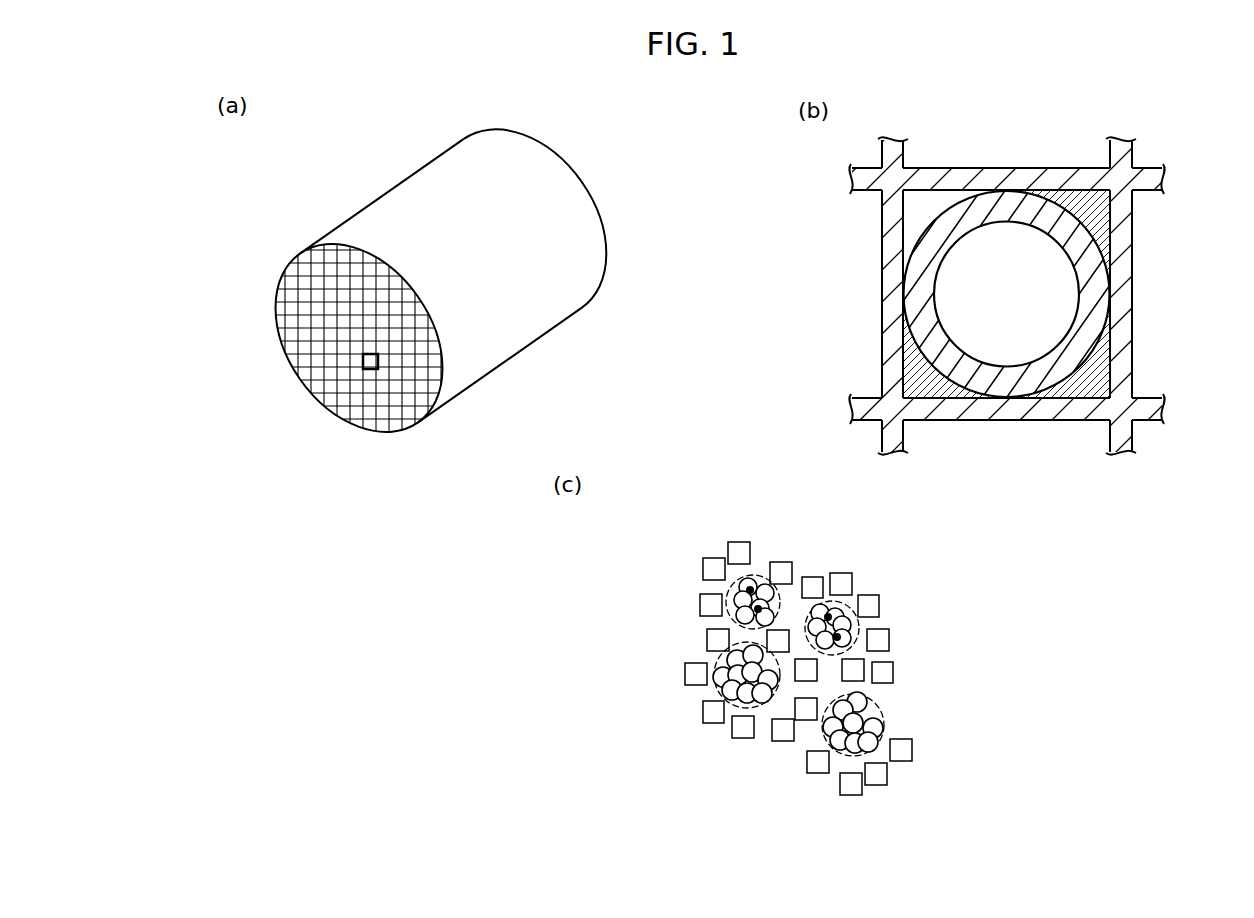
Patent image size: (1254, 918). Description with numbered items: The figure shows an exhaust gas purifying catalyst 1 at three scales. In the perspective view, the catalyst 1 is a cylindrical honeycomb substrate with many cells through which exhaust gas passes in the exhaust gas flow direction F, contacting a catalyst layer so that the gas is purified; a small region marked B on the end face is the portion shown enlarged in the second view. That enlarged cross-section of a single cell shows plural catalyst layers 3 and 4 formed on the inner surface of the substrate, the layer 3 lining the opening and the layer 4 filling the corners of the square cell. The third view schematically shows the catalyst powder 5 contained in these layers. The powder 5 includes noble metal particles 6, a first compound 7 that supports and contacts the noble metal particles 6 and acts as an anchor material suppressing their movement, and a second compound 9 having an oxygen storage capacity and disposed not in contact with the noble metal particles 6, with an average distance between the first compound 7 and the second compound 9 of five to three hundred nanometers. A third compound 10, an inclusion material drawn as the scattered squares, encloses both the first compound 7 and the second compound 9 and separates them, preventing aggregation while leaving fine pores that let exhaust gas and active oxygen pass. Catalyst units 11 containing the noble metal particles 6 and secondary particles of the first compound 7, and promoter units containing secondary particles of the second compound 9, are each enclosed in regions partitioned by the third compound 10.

The exhaust gas purifying catalyst 1 is at (435, 281).
The catalyst layer 3 is at (978, 392).
The catalyst layer 4 is at (1075, 394).
The catalyst powder 5 is at (797, 665).
The noble metal particles 6 is at (842, 640).
The first compound 7 is at (833, 603).
The second compound 9 is at (873, 727).
The third compound 10 is at (885, 778).
The catalyst units 11 is at (763, 573).
The partially enlarged region B is at (383, 358).
The exhaust gas flow direction F is at (482, 407).